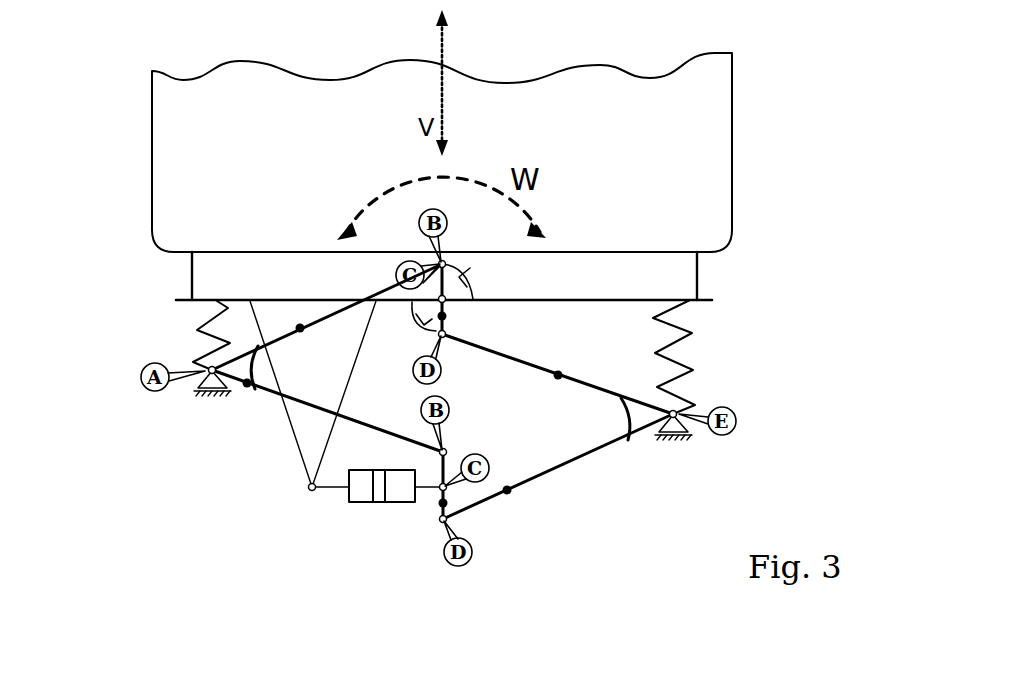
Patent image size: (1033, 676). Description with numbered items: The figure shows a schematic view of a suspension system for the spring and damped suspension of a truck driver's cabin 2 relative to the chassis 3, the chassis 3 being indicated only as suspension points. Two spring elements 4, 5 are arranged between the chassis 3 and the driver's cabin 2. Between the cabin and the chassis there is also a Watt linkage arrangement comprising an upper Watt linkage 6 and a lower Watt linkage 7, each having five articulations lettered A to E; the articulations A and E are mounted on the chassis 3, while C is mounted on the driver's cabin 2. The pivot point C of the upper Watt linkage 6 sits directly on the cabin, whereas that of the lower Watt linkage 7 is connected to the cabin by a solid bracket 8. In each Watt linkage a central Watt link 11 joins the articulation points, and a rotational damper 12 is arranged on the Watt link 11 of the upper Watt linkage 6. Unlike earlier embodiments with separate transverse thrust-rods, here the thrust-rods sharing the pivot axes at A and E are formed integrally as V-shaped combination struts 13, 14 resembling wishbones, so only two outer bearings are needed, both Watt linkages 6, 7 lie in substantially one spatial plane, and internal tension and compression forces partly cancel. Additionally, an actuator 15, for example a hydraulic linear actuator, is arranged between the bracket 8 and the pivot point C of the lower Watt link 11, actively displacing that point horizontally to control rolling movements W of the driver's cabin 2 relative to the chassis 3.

The driver's cabin 2 is at (697, 139).
The chassis 3 is at (197, 402).
The spring element 4 is at (210, 334).
The spring element 5 is at (675, 342).
The upper Watt linkage 6 is at (312, 274).
The lower Watt linkage 7 is at (552, 518).
The bracket 8 is at (313, 444).
The Watt link 11 is at (444, 316).
The rotational damper 12 is at (478, 271).
The combination strut 13 is at (300, 330).
The combination strut 14 is at (558, 375).
The actuator 15 is at (370, 507).